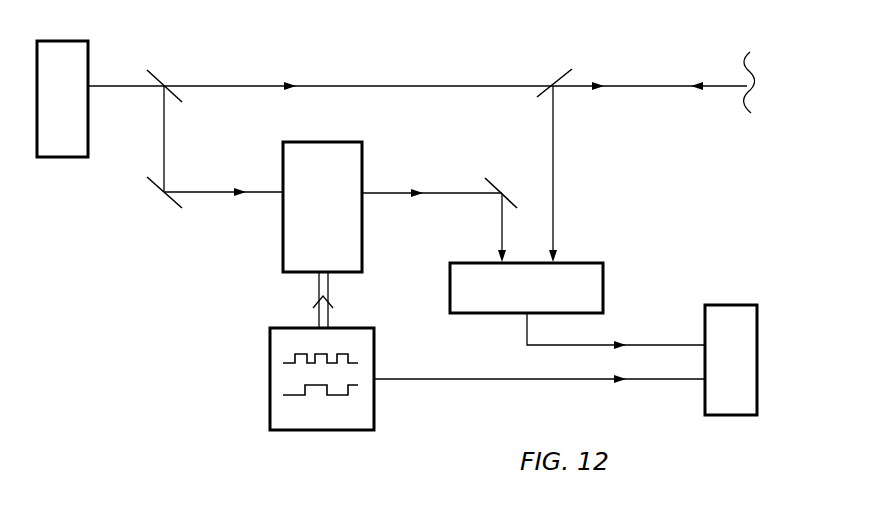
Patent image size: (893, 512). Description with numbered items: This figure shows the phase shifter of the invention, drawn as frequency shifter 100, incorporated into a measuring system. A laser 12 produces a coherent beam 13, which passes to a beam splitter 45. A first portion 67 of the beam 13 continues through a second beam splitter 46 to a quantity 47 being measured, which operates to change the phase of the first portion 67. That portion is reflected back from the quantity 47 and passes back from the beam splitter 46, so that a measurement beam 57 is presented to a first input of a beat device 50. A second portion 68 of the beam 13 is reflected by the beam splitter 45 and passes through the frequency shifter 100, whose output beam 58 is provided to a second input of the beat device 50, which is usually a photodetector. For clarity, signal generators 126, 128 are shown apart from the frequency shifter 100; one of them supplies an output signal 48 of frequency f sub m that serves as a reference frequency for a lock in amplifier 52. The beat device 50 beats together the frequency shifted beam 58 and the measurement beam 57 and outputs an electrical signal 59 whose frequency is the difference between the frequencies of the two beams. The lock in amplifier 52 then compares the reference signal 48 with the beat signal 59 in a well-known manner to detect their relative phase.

The laser 12 is at (76, 117).
The coherent beam 13 is at (125, 85).
The beam splitter 45 is at (157, 72).
The beam splitter 46 is at (563, 75).
The quantity 47 is at (757, 60).
The output signal 48 is at (520, 382).
The beat device 50 is at (540, 298).
The lock in amplifier 52 is at (717, 360).
The beam 57 is at (553, 197).
The output beam 58 is at (502, 215).
The electrical signal 59 is at (638, 342).
The first portion 67 is at (363, 87).
The second portion 68 is at (165, 132).
The frequency shifter 100 is at (300, 227).
The signal generator 126 is at (243, 351).
The signal generator 128 is at (270, 382).